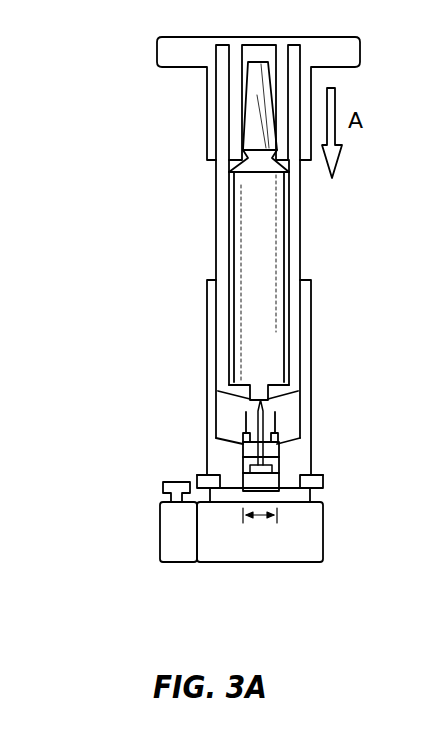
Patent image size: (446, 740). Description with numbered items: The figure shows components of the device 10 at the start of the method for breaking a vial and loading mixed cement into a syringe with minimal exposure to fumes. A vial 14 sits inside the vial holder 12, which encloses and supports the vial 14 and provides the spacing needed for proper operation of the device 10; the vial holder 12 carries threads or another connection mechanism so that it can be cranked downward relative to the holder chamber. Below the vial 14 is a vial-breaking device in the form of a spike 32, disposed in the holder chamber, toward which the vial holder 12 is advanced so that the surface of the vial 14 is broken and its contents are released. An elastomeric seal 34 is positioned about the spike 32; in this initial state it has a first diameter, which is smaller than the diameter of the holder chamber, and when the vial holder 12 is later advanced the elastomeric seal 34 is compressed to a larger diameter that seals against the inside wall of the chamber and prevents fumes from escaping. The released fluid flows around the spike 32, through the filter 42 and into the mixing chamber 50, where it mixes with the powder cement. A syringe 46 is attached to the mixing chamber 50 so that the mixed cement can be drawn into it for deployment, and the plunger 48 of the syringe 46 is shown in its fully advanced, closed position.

The device 10 is at (127, 110).
The vial holder 12 is at (300, 235).
The vial 14 is at (270, 273).
The spike 32 is at (260, 423).
The elastomeric seal 34 is at (279, 463).
The filter 42 is at (297, 498).
The syringe 46 is at (178, 528).
The plunger 48 is at (170, 482).
The mixing chamber 50 is at (323, 537).